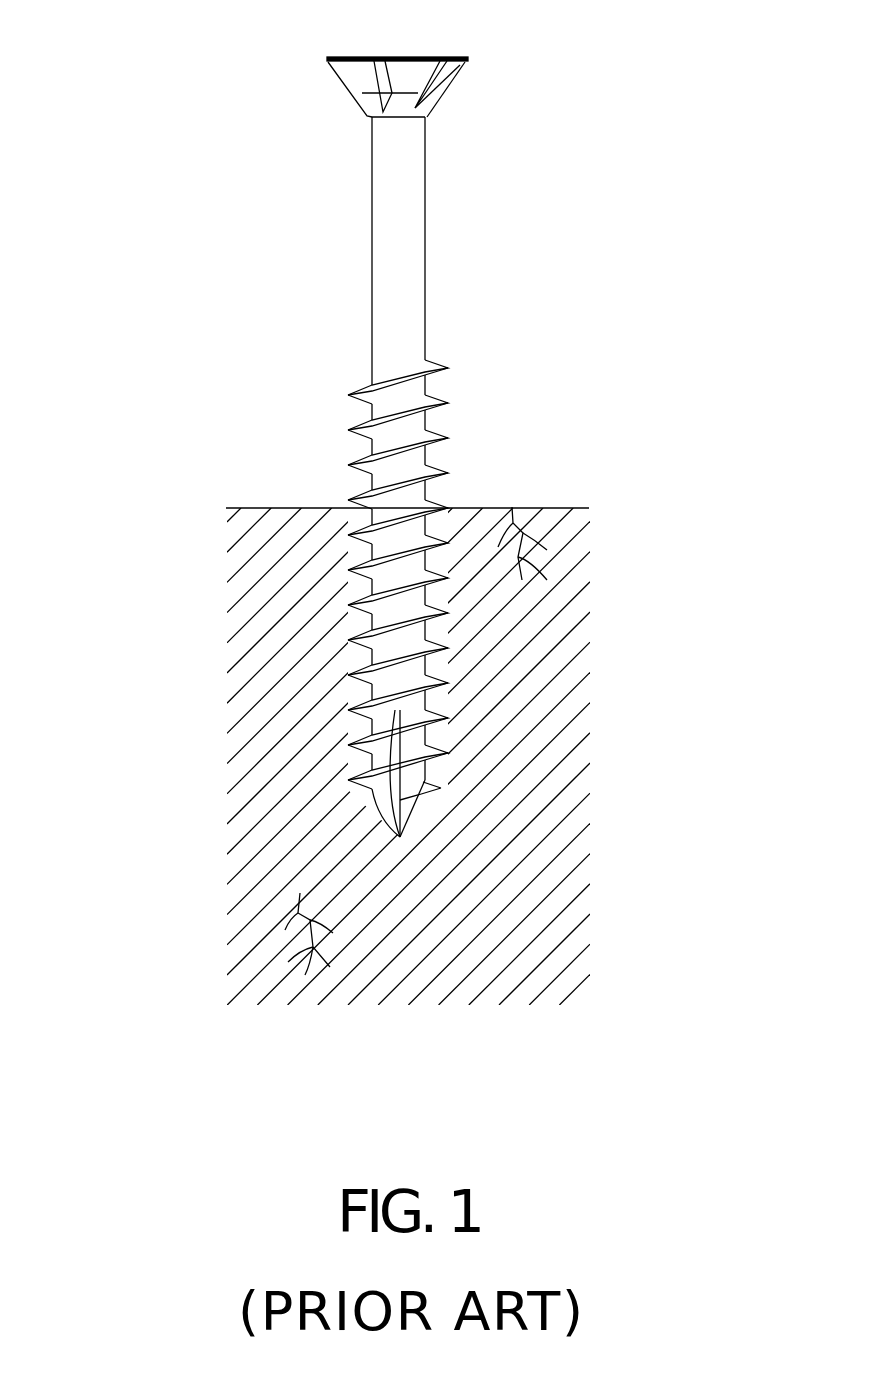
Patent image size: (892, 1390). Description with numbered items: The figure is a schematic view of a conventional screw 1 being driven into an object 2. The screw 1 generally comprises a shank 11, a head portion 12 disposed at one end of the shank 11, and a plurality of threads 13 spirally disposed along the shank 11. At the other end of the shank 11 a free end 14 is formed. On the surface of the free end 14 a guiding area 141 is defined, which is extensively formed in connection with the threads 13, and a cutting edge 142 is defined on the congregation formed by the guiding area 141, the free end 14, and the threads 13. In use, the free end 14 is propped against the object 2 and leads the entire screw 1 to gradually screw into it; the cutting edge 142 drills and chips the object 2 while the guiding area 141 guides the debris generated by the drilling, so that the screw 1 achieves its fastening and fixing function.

The screw 1 is at (185, 158).
The shank 11 is at (425, 212).
The head portion 12 is at (465, 68).
The threads 13 is at (448, 434).
The free end 14 is at (402, 835).
The guiding area 141 is at (402, 760).
The cutting edge 142 is at (396, 762).
The object 2 is at (297, 507).